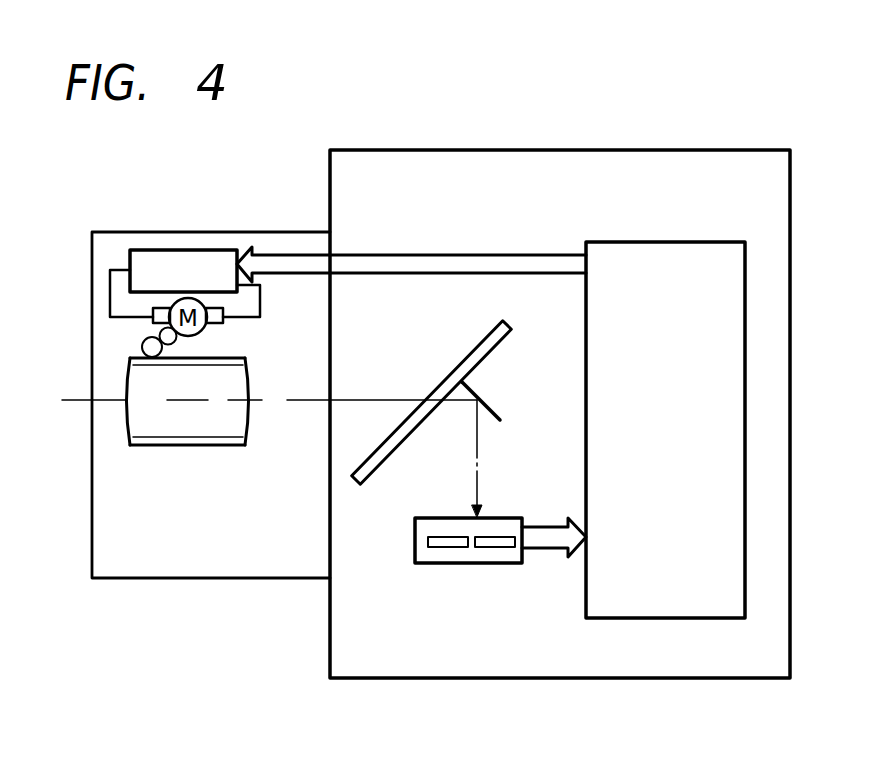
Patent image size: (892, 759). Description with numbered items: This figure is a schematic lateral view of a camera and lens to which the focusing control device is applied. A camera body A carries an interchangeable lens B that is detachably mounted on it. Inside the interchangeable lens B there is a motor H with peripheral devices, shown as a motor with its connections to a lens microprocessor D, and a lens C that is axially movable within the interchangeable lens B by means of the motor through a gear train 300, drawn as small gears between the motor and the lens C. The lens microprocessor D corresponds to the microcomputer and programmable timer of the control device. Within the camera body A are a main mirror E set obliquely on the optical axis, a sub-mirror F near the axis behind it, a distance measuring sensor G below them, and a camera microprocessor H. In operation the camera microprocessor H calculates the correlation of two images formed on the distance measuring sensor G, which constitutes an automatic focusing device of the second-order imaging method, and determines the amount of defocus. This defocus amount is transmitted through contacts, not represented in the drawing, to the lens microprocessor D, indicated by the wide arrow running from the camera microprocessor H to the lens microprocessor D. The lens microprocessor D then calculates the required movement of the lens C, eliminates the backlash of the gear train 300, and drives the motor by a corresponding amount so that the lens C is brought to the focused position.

The camera body A is at (458, 150).
The interchangeable lens B is at (165, 232).
The lens C is at (128, 437).
The microprocessor D is at (222, 250).
The main mirror E is at (470, 355).
The sub-mirror F is at (492, 408).
The distance measuring sensor G is at (455, 518).
The motor / camera microprocessor H is at (170, 324).
The gear train 300 is at (140, 343).